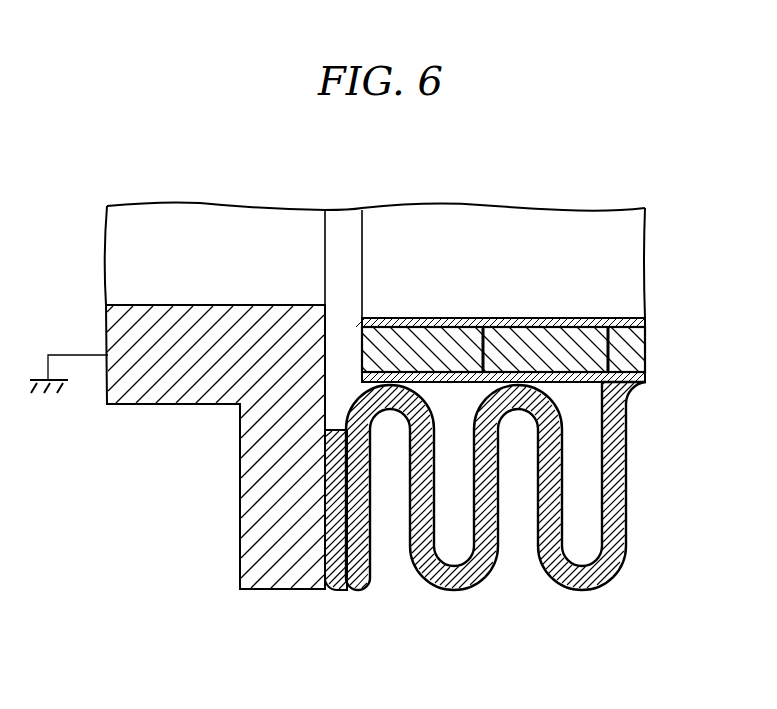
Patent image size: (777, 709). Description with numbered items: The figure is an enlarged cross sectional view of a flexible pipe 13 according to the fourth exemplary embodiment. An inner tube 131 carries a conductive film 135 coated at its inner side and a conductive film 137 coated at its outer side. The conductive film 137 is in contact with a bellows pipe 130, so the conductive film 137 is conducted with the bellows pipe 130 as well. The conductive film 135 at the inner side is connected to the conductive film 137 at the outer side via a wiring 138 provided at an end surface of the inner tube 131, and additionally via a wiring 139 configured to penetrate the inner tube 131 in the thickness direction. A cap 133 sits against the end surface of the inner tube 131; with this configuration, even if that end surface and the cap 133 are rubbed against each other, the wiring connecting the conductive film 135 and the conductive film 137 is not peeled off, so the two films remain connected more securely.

The flexible pipe 13 is at (657, 167).
The bellows pipe 130 is at (627, 491).
The inner tube 131 is at (637, 348).
The cap 133 is at (170, 406).
The conductive film 135 is at (412, 318).
The conductive film 137 is at (580, 383).
The wiring 138 is at (358, 347).
The wiring 139 is at (487, 350).